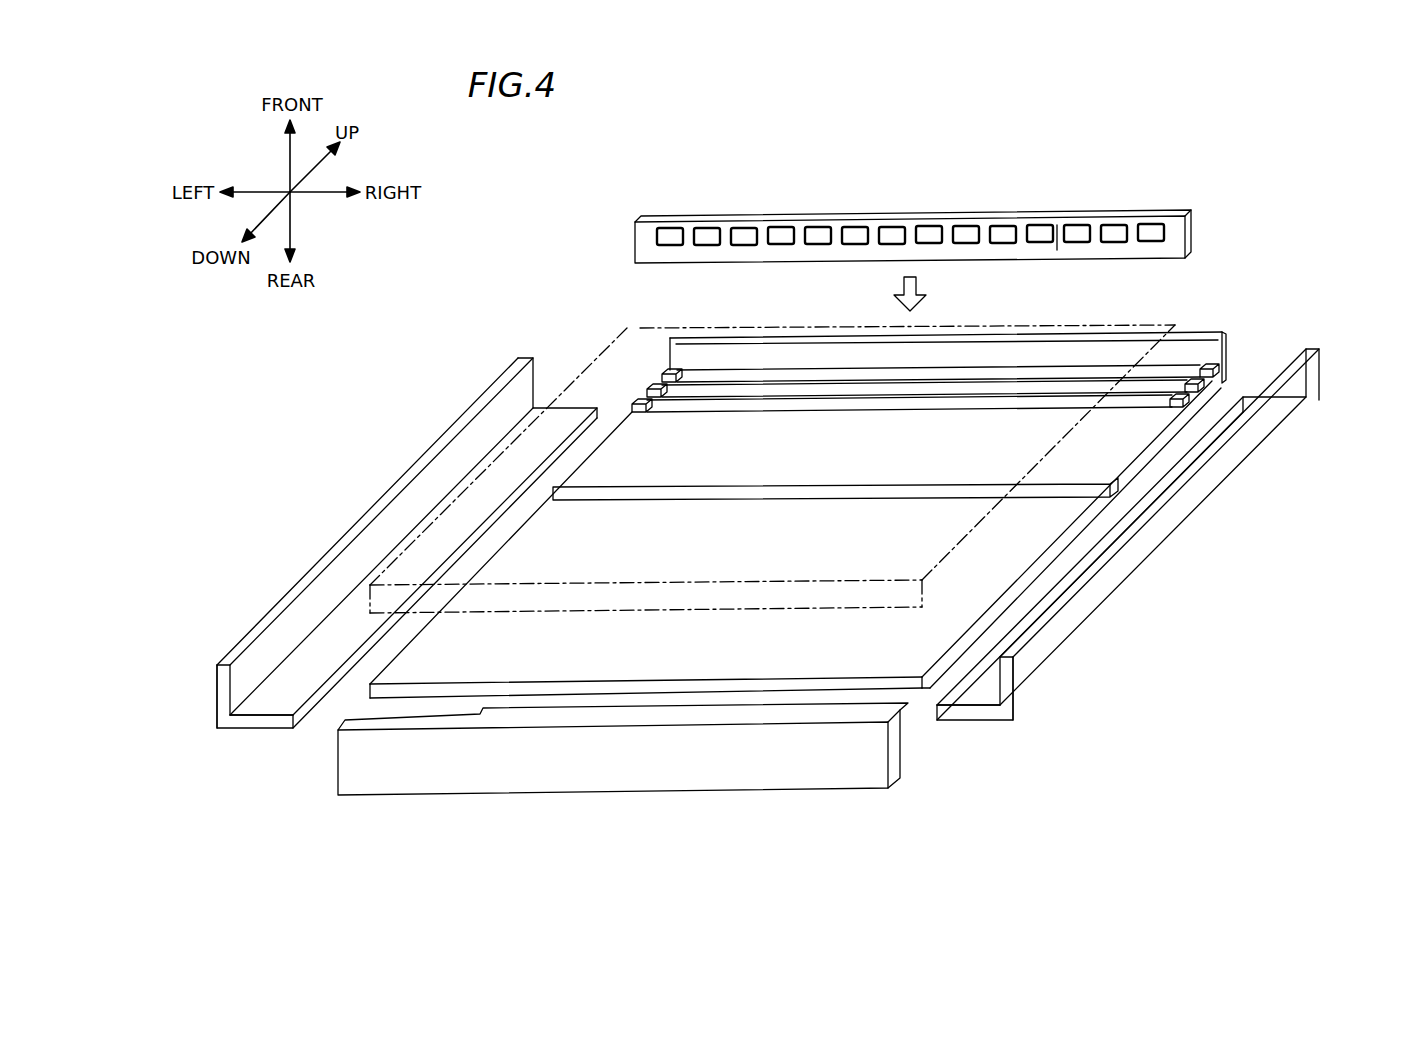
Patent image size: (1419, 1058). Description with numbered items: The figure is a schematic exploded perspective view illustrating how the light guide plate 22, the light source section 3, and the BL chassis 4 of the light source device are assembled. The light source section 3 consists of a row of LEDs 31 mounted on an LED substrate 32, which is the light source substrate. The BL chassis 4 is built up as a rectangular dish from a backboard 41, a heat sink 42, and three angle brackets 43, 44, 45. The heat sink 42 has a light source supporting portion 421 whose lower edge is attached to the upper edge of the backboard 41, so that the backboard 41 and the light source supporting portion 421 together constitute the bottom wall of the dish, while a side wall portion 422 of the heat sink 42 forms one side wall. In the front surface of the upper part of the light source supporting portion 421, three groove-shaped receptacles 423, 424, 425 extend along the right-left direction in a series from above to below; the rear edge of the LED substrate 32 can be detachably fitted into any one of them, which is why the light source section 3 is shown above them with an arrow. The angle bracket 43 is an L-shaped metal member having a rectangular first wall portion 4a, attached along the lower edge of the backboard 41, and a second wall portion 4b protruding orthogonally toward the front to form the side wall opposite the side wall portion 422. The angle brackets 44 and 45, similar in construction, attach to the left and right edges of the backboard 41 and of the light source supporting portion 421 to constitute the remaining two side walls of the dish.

The light source section 3 is at (913, 176).
The LEDs 31 is at (1000, 233).
The LED substrate 32 is at (1072, 199).
The light guide plate 22 is at (605, 344).
The BL chassis 4 is at (785, 584).
The first wall portion 4a is at (265, 729).
The second wall portion 4b is at (221, 688).
The backboard 41 is at (924, 660).
The heat sink 42 is at (879, 535).
The light source supporting portion 421 is at (1120, 444).
The side wall portion 422 is at (1196, 334).
The receptacle 423 is at (1220, 378).
The receptacle 424 is at (1200, 392).
The receptacle 425 is at (1185, 408).
The angle bracket 43 is at (708, 812).
The angle bracket 44 is at (240, 618).
The angle bracket 45 is at (1125, 636).